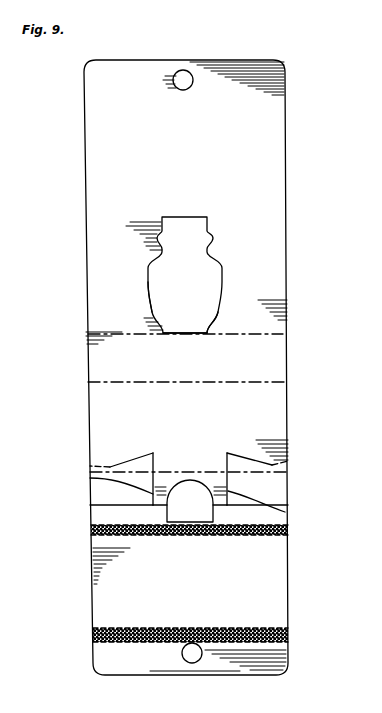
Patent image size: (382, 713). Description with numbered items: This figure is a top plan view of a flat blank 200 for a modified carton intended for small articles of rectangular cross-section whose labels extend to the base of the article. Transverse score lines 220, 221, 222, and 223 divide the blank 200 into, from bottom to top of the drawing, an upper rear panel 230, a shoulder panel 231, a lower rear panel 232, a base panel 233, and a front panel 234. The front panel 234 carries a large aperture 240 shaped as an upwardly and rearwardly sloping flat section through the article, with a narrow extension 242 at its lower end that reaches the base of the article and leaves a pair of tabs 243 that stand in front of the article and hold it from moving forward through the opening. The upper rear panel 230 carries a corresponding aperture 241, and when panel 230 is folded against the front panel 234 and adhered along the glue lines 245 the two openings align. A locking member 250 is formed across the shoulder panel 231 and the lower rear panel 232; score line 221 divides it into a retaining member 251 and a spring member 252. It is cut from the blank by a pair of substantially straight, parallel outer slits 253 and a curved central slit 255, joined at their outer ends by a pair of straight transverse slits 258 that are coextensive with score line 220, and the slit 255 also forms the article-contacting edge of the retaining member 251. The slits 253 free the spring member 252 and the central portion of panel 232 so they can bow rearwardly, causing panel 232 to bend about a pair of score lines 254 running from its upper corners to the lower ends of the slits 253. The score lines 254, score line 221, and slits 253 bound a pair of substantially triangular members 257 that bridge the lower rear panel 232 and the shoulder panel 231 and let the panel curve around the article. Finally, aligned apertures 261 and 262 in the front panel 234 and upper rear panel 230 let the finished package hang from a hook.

The blank 200 is at (294, 332).
The score line 220 is at (95, 505).
The score line 221 is at (167, 472).
The score line 222 is at (270, 383).
The score line 223 is at (278, 334).
The upper rear panel 230 is at (189, 610).
The shoulder panel 231 is at (190, 488).
The lower rear panel 232 is at (189, 413).
The base panel 233 is at (186, 362).
The front panel 234 is at (186, 172).
The aperture 240 is at (222, 270).
The aperture 241 is at (214, 510).
The extension 242 is at (186, 336).
The tabs 243 is at (155, 323).
The glue lines 245 is at (91, 529).
The locking member 250 is at (208, 452).
The retaining member 251 is at (211, 480).
The spring member 252 is at (185, 460).
The outer slits 253 is at (90, 478).
The score lines 254 is at (121, 452).
The curved central slit 255 is at (213, 498).
The triangular members 257 is at (110, 467).
The transverse slits 258 is at (167, 505).
The aperture 261 is at (186, 70).
The aperture 262 is at (194, 664).